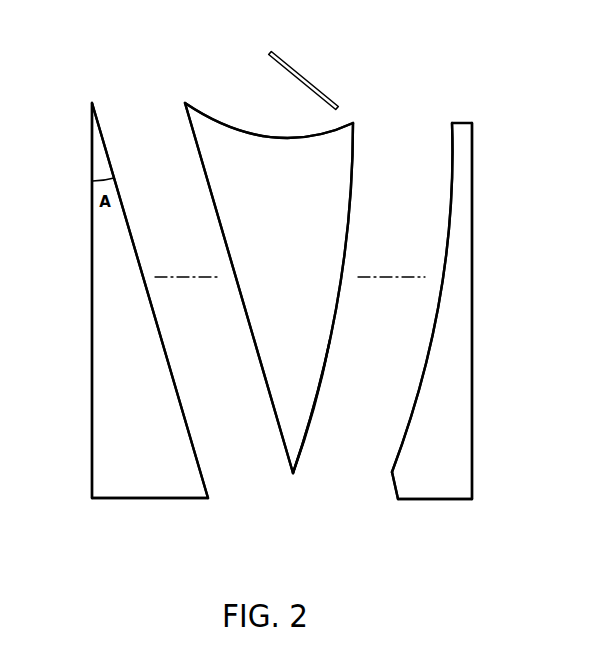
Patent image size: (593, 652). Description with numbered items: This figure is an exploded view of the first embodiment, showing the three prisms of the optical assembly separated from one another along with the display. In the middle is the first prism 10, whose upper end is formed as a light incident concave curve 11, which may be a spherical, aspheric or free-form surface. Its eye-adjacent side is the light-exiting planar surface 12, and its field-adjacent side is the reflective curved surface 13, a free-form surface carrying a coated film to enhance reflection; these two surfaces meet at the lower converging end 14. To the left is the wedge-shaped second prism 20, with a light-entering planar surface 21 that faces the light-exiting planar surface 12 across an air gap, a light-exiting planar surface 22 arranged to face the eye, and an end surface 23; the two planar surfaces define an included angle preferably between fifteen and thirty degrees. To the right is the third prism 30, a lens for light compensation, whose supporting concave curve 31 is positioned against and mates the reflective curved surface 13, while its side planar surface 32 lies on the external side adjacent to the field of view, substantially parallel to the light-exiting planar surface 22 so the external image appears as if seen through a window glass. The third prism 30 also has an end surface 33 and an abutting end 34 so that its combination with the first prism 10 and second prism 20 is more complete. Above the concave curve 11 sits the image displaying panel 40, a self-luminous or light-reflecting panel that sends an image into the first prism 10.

The first prism 10 is at (190, 94).
The light incident concave curve 11 is at (253, 135).
The light-exiting planar surface 12 is at (205, 173).
The reflective curved surface 13 is at (353, 175).
The converging end 14 is at (310, 398).
The second prism 20 is at (86, 450).
The light-entering planar surface 21 is at (170, 358).
The light-exiting planar surface 22 is at (92, 328).
The end surface 23 is at (137, 500).
The third prism 30 is at (488, 416).
The supporting concave curve 31 is at (430, 330).
The side planar surface 32 is at (472, 243).
The end surface 33 is at (427, 500).
The abutting end 34 is at (395, 490).
The image displaying panel 40 is at (308, 82).